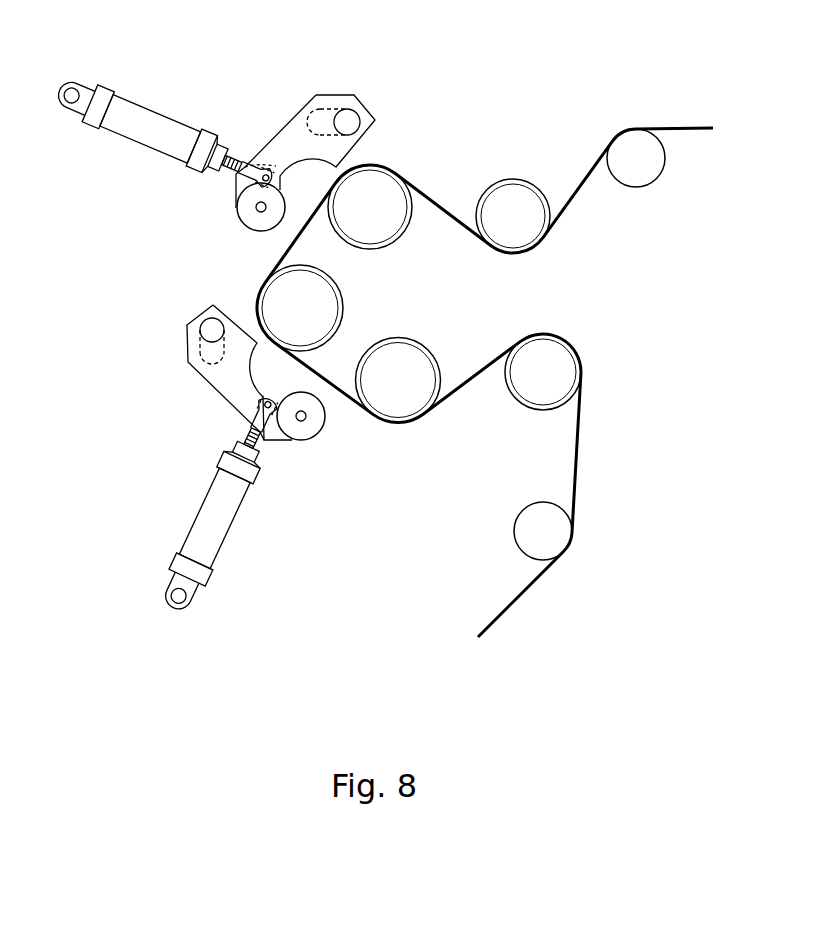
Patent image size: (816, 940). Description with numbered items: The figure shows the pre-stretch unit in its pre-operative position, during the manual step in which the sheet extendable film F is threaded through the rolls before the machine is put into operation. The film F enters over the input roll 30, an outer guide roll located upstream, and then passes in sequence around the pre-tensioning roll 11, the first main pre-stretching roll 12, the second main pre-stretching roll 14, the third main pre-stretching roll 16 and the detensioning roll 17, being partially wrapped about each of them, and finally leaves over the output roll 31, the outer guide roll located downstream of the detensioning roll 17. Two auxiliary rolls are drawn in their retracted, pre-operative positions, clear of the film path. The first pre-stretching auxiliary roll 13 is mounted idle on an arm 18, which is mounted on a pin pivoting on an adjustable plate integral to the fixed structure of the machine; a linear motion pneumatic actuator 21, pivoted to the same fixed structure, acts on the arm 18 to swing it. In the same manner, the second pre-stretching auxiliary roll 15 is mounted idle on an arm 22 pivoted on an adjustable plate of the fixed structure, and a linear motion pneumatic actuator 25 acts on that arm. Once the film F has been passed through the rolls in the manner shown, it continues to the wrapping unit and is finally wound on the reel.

The sheet extendable film F is at (690, 127).
The pre-tensioning roll 11 is at (513, 200).
The first main pre-stretching roll 12 is at (383, 187).
The first pre-stretching auxiliary roll 13 is at (250, 218).
The second main pre-stretching roll 14 is at (320, 300).
The second pre-stretching auxiliary roll 15 is at (305, 432).
The third main pre-stretching roll 16 is at (398, 405).
The detensioning roll 17 is at (556, 367).
The arm 18 is at (290, 132).
The linear motion pneumatic actuator 21 is at (133, 135).
The arm 22 is at (225, 380).
The linear motion pneumatic actuator 25 is at (215, 545).
The input roll 30 is at (636, 172).
The output roll 31 is at (520, 525).